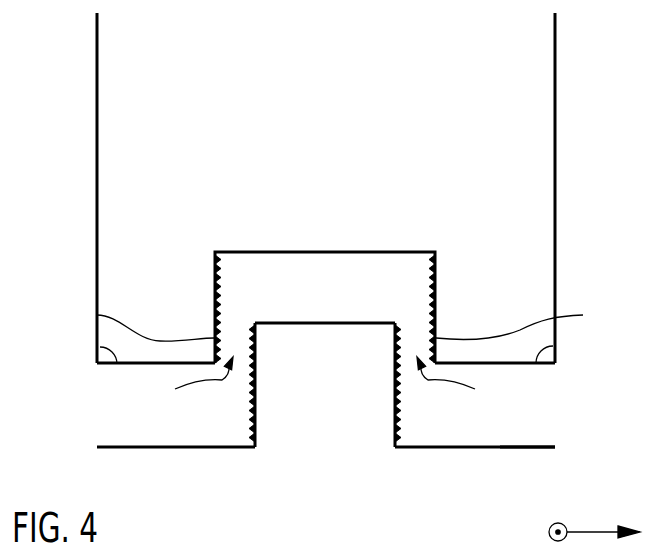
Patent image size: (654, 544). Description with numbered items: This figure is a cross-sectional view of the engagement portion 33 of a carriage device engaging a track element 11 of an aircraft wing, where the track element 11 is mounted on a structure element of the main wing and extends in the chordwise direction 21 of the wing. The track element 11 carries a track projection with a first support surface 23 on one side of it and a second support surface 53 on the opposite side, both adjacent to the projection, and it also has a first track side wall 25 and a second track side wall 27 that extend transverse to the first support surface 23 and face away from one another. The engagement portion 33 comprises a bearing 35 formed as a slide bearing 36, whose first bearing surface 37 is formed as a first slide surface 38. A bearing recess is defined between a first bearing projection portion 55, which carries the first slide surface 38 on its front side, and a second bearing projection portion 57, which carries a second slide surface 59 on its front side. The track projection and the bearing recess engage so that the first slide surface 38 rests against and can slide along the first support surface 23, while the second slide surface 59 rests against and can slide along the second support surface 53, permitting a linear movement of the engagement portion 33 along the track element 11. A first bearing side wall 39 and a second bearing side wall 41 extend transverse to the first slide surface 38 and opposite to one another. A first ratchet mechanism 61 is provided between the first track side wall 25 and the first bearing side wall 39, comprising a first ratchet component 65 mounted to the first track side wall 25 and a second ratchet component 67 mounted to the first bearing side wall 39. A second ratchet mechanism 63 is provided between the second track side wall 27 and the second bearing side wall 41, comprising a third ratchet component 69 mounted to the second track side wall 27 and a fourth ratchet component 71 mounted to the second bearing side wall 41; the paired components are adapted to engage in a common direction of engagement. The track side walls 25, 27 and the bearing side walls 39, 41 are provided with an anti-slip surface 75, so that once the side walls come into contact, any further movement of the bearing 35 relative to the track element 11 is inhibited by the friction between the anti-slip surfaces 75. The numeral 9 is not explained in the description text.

The axis / direction of rotation 9 is at (592, 530).
The track element 11 is at (510, 489).
The chordwise direction 21 is at (548, 532).
The first support surface 23 is at (183, 449).
The first track side wall 25 is at (254, 415).
The second track side wall 27 is at (397, 415).
The engagement portion 33 is at (326, 188).
The bearing 35 is at (326, 188).
The slide bearing 36 is at (372, 104).
The first bearing surface 37 is at (62, 344).
The first slide surface 38 is at (100, 347).
The first bearing side wall 39 is at (224, 297).
The second bearing side wall 41 is at (426, 297).
The second support surface 53 is at (538, 449).
The first bearing projection portion 55 is at (168, 312).
The second bearing projection portion 57 is at (506, 313).
The second slide surface 59 is at (553, 346).
The first ratchet mechanism 61 is at (191, 378).
The second ratchet mechanism 63 is at (461, 379).
The first ratchet component 65 is at (257, 385).
The second ratchet component 67 is at (97, 315).
The third ratchet component 69 is at (393, 385).
The fourth ratchet component 71 is at (524, 318).
The anti-slip surface 75 is at (233, 256).